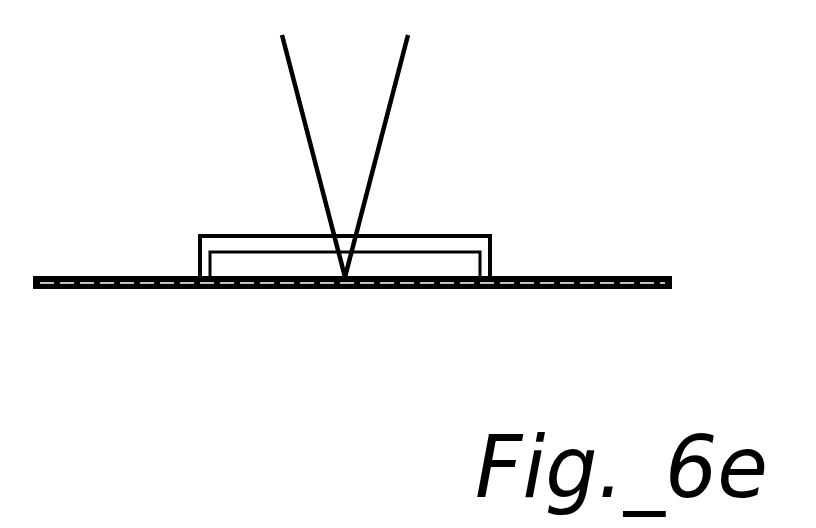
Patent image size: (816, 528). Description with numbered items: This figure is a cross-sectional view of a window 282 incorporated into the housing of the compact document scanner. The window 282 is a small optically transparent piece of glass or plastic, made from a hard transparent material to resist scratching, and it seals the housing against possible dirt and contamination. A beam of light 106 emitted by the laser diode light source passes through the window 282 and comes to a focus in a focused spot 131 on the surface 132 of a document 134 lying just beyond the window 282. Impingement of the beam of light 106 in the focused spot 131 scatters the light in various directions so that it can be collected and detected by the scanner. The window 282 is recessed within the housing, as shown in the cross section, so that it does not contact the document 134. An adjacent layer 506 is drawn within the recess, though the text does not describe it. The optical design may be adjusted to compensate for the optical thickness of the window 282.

The beam of light 106 is at (388, 122).
The focused spot 131 is at (350, 275).
The surface 132 is at (575, 274).
The document 134 is at (520, 288).
The window 282 is at (248, 236).
The inner layer 506 is at (490, 240).